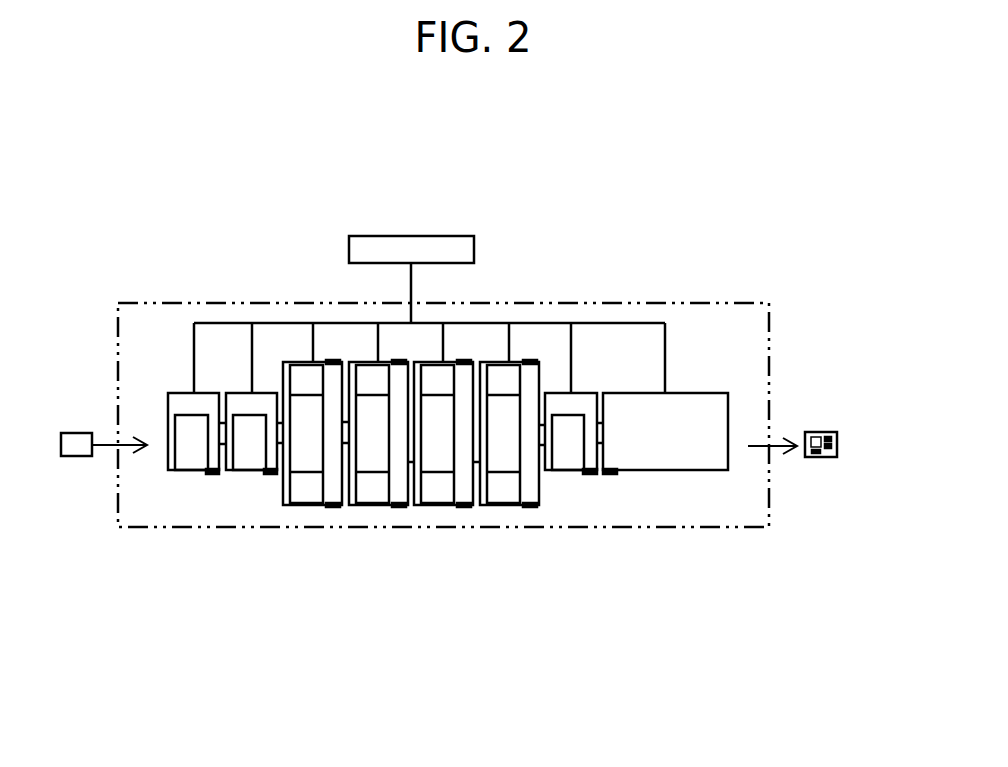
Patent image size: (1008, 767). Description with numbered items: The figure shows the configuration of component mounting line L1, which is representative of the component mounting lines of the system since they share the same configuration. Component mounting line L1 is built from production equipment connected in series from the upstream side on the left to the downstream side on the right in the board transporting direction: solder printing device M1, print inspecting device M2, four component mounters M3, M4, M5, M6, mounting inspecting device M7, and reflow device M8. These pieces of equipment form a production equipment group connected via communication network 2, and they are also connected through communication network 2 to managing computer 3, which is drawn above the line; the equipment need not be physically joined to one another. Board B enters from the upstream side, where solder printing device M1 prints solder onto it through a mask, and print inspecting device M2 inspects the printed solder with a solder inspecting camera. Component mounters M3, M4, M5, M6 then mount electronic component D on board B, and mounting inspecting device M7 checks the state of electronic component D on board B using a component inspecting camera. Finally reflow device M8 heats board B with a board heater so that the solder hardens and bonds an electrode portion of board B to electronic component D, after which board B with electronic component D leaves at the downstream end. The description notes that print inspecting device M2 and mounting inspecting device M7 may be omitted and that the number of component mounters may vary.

The communication network 2 is at (623, 322).
The managing computer 3 is at (457, 235).
The component mounting line L1 is at (739, 303).
The board B is at (76, 433).
The electronic component D is at (826, 453).
The solder printing device M1 is at (193, 558).
The print inspecting device M2 is at (252, 558).
The component mounter M3 is at (313, 558).
The component mounter M4 is at (378, 558).
The component mounter M5 is at (443, 558).
The component mounter M6 is at (509, 558).
The mounting inspecting device M7 is at (571, 558).
The reflow device M8 is at (665, 558).